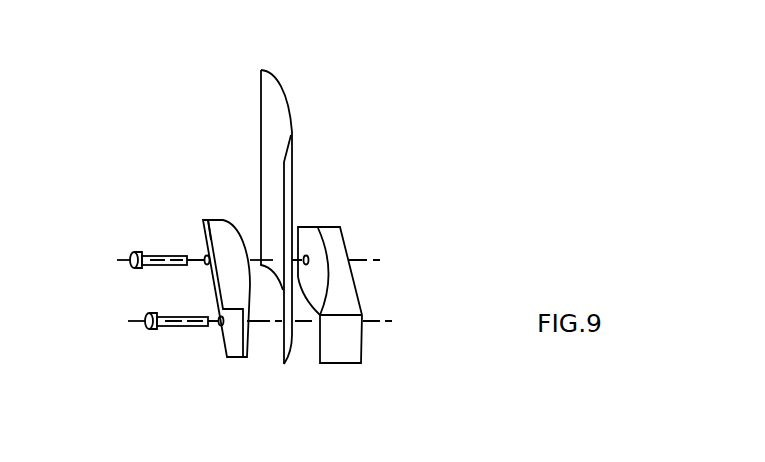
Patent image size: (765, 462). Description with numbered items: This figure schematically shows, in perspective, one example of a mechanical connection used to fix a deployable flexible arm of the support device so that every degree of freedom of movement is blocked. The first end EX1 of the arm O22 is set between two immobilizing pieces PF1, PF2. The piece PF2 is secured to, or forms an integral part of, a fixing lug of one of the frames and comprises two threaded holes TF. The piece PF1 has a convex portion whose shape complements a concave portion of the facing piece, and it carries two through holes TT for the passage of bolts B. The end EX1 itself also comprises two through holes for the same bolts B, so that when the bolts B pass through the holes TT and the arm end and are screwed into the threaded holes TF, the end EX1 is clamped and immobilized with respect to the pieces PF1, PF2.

The arm O22 is at (268, 124).
The first end EX1 is at (275, 370).
The immobilizing piece PF1 is at (235, 348).
The immobilizing piece PF2 is at (338, 352).
The through holes TT is at (200, 245).
The threaded holes TF is at (318, 243).
The bolts B is at (136, 310).